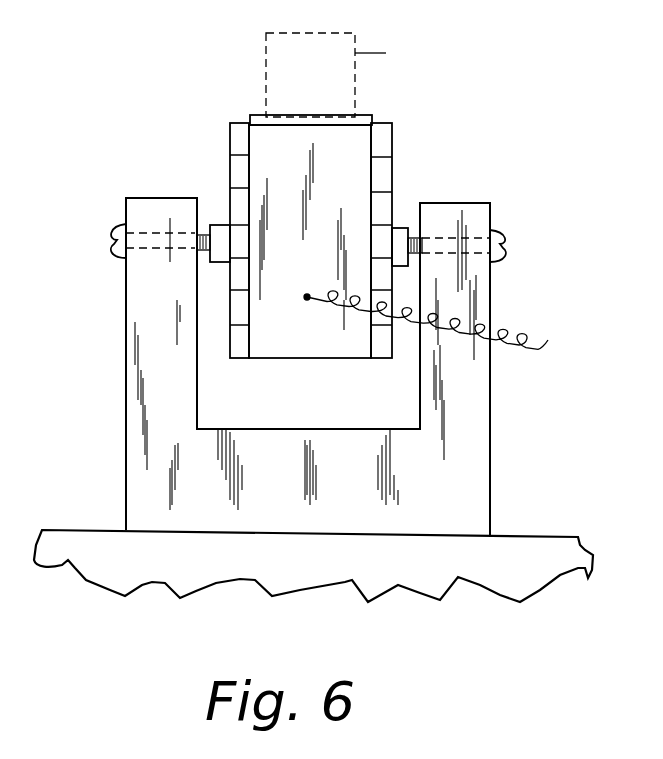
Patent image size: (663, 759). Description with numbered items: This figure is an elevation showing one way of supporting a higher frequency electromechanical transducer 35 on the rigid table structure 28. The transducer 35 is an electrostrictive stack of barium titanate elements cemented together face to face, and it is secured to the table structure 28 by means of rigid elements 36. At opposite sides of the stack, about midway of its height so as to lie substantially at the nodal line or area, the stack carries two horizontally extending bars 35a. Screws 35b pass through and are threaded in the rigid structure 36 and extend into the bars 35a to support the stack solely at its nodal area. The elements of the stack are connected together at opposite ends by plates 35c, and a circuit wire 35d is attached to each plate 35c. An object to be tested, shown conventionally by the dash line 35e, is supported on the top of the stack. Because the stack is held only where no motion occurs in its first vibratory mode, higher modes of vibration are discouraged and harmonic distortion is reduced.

The table structure 28 is at (535, 536).
The rigid elements 36 is at (485, 293).
The higher frequency electromechanical transducer 35 is at (320, 202).
The bars 35a is at (220, 225).
The screws 35b is at (115, 248).
The plates 35c is at (350, 150).
The circuit wire 35d is at (530, 350).
The dash line 35e is at (337, 33).